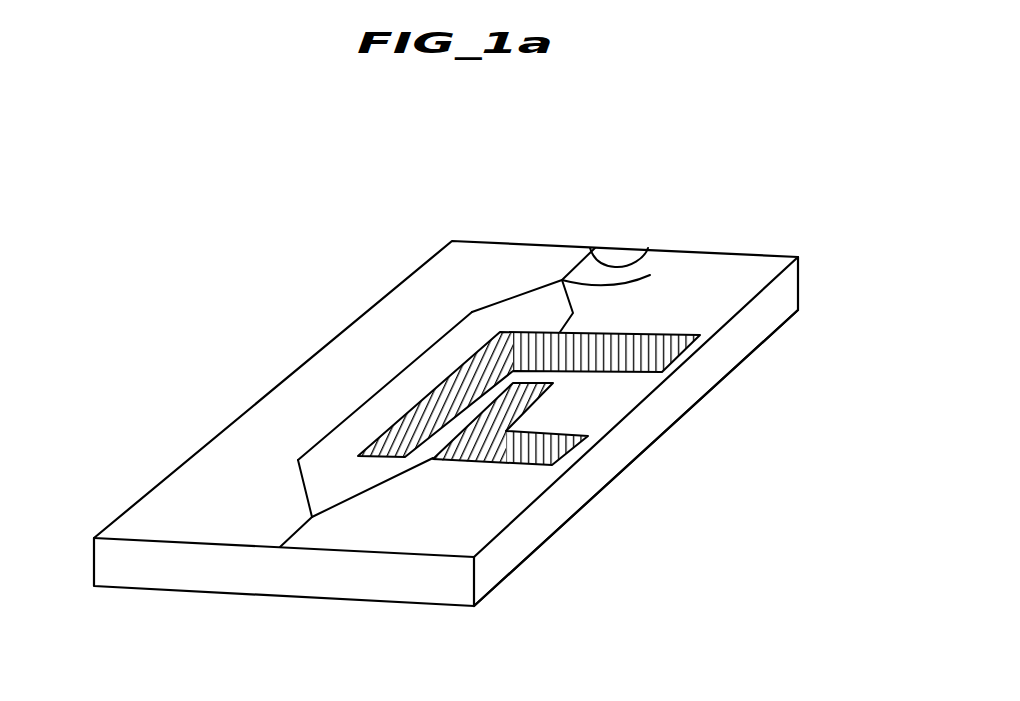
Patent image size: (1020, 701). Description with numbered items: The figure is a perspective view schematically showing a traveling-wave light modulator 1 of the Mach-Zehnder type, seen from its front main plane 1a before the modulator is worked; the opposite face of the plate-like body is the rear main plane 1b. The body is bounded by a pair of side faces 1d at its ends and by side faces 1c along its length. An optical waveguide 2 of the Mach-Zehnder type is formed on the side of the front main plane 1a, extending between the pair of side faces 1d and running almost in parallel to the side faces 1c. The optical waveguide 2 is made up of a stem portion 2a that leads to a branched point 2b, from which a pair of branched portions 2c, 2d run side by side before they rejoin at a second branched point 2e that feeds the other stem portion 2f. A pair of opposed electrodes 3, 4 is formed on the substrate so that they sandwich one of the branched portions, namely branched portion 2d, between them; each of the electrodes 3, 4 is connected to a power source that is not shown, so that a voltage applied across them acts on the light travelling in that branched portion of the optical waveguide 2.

The traveling-wave light modulator 1 is at (783, 243).
The front main plane 1a is at (482, 262).
The rear main plane 1b is at (573, 517).
The side faces 1c is at (603, 468).
The side faces 1d is at (628, 248).
The optical waveguide 2 is at (556, 241).
The stem portion 2a is at (290, 536).
The branched point 2b is at (312, 516).
The branched portion 2c is at (398, 374).
The branched portion 2d is at (425, 456).
The branched point 2e is at (650, 275).
The stem portion 2f is at (648, 248).
The electrode 3 is at (682, 348).
The electrode 4 is at (588, 443).